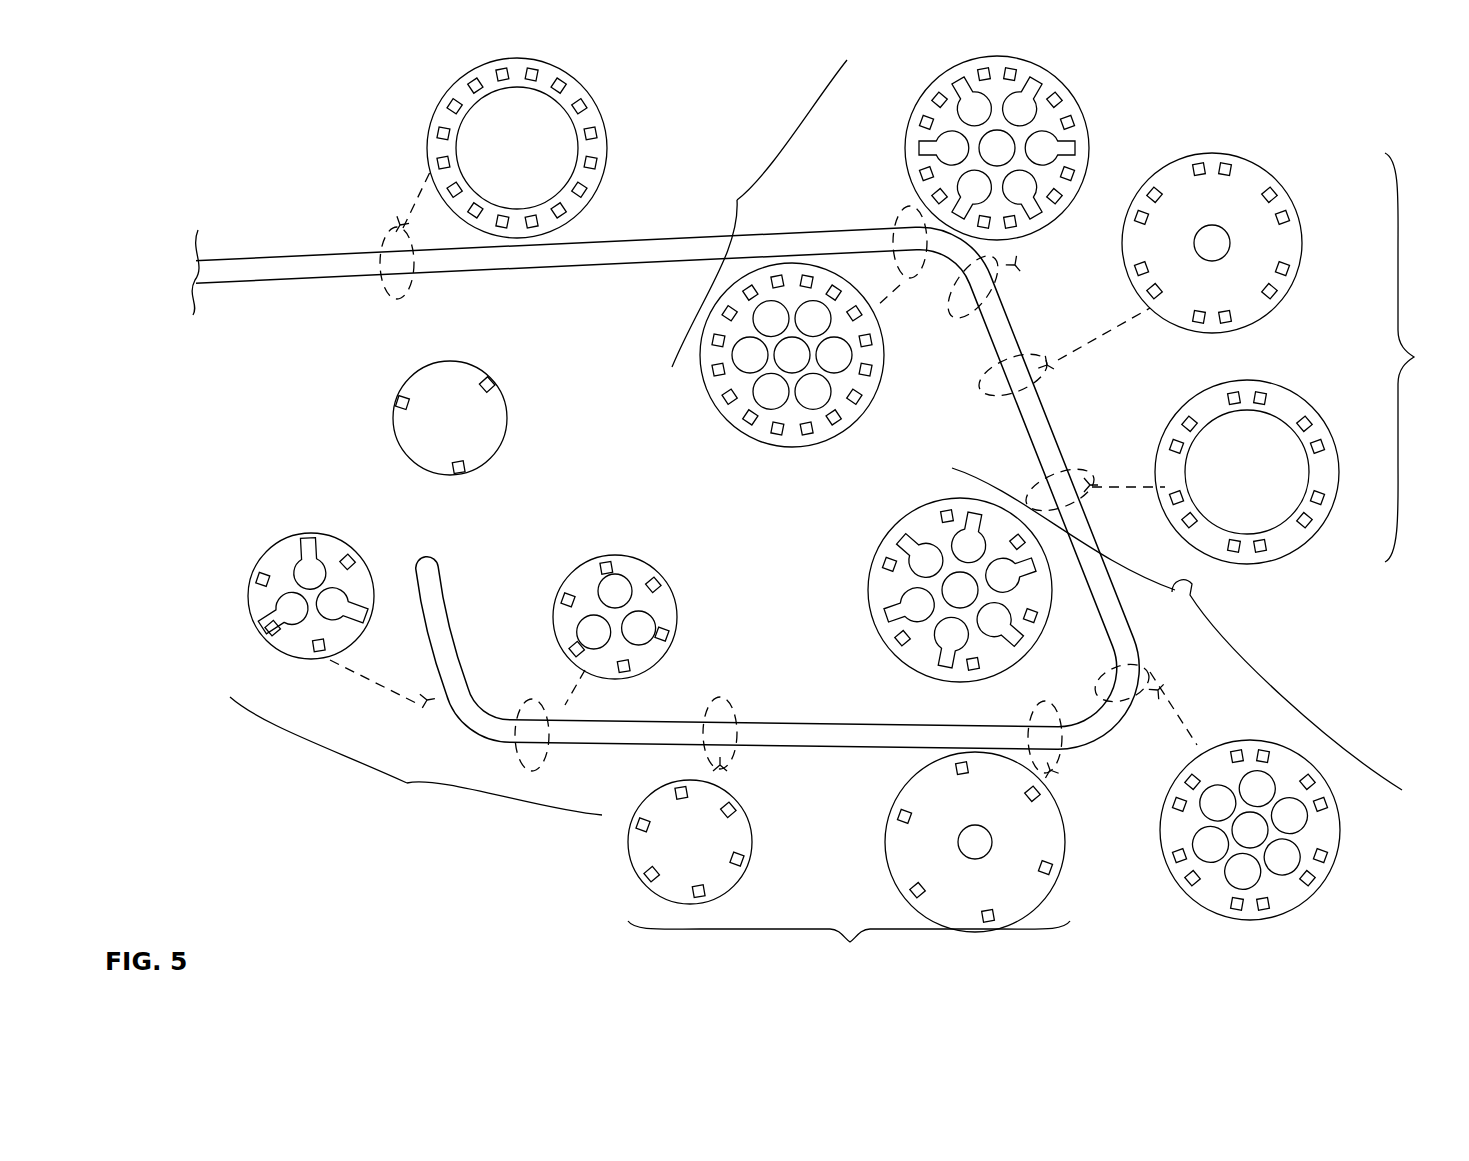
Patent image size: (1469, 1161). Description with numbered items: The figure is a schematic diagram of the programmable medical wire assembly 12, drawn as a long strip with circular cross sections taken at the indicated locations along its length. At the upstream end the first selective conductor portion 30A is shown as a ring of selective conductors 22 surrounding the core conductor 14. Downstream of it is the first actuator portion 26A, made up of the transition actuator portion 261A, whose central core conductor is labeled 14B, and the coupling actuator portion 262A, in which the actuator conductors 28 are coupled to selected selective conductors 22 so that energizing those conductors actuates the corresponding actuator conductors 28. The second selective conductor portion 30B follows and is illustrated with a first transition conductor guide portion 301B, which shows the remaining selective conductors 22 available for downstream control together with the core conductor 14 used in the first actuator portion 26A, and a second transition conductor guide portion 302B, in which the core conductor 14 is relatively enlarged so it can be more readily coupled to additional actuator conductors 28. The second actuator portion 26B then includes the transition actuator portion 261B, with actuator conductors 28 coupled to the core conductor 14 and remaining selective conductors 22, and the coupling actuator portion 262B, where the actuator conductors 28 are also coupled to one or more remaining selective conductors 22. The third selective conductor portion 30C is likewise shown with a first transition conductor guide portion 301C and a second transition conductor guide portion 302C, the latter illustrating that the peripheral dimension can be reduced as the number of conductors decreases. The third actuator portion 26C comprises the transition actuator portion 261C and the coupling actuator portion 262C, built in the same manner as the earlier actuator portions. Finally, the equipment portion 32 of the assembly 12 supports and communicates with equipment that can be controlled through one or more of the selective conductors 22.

The programmable wire assembly 12 is at (314, 272).
The core conductor 14 is at (538, 137).
The drive hub 14B is at (793, 355).
The selective conductors 22 is at (1020, 110).
The actuator conductors 28 is at (1045, 150).
The first actuator portion 26A is at (737, 200).
The second actuator portion 26B is at (1192, 586).
The third actuator portion 26C is at (416, 757).
The ring wheel A 30A is at (447, 100).
The second selective conductor portion 30B is at (1427, 357).
The third selective conductor portion 30C is at (849, 951).
The equipment portion 32 is at (385, 442).
The transition actuator portion 261A is at (768, 440).
The coupling actuator portion 262A is at (912, 104).
The transition actuator portion 261B is at (1228, 742).
The coupling actuator portion 262B is at (878, 546).
The transition actuator portion 261C is at (678, 620).
The coupling actuator portion 262C is at (258, 617).
The first transition conductor guide portion 301B is at (1268, 177).
The second transition conductor guide portion 302B is at (1282, 550).
The first transition conductor guide portion 301C is at (887, 826).
The second transition conductor guide portion 302C is at (642, 878).